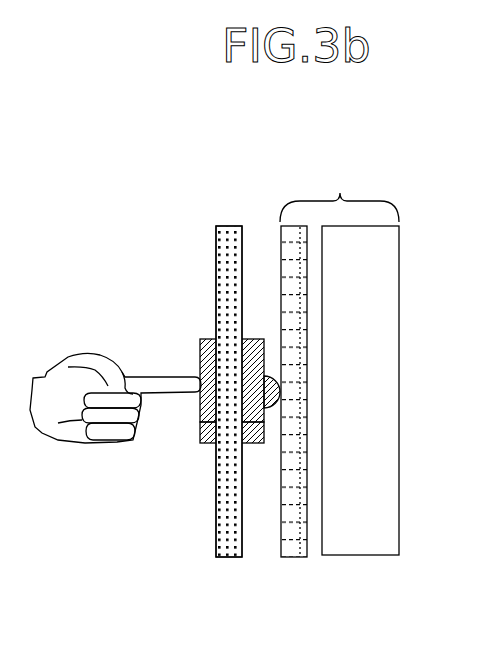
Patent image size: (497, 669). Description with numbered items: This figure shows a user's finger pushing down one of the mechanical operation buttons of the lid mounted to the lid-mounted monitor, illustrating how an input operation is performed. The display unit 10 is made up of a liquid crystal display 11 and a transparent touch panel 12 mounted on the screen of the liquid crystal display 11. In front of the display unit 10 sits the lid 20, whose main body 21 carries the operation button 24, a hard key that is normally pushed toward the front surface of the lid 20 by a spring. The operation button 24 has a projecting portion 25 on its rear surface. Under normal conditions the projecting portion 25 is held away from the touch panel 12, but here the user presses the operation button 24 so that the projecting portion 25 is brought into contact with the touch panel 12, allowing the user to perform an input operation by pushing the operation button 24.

The display unit 10 is at (343, 192).
The liquid crystal display 11 is at (397, 279).
The touch panel 12 is at (291, 558).
The lid 20 is at (232, 220).
The main body 21 is at (216, 278).
The operation button 24 is at (200, 345).
The projecting portion 25 is at (200, 422).